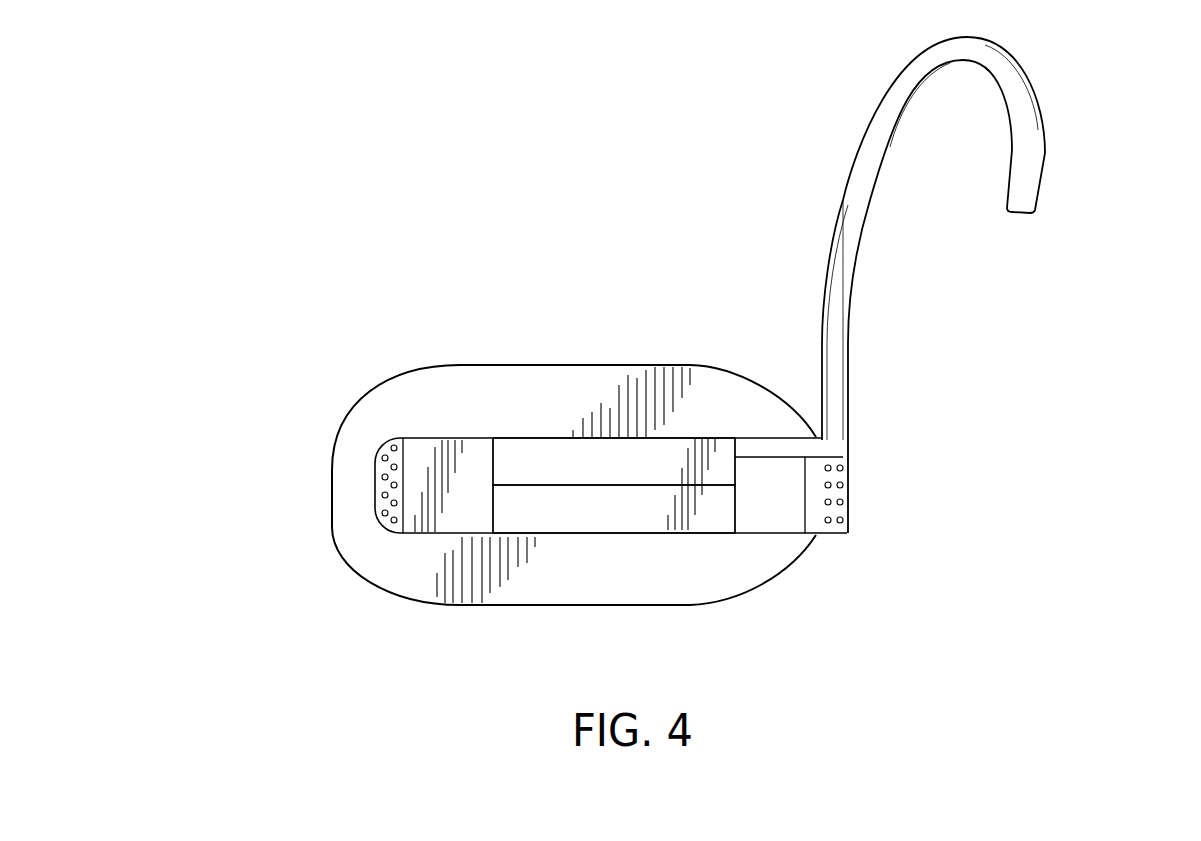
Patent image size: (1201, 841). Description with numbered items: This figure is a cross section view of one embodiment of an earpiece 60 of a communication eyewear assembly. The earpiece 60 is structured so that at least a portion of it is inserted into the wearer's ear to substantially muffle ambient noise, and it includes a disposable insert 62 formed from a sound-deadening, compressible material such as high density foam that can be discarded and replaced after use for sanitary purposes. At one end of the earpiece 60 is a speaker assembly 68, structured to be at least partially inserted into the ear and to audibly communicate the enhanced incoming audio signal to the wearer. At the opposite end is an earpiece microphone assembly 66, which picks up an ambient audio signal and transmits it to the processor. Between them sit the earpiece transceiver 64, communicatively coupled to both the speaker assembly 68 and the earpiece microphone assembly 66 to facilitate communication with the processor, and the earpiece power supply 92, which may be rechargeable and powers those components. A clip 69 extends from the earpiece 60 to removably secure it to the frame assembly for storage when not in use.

The earpiece 60 is at (433, 294).
The disposable insert 62 is at (600, 383).
The earpiece transceiver 64 is at (624, 518).
The earpiece microphone assembly 66 is at (848, 512).
The speaker assembly 68 is at (385, 458).
The clip 69 is at (1038, 187).
The earpiece power supply 92 is at (601, 475).